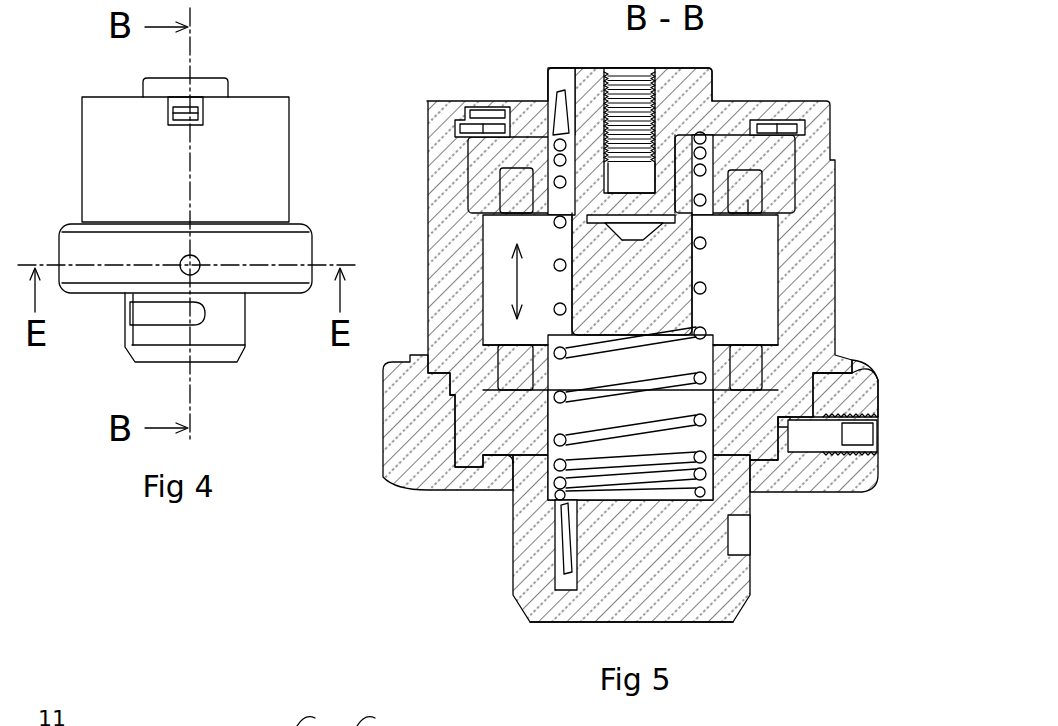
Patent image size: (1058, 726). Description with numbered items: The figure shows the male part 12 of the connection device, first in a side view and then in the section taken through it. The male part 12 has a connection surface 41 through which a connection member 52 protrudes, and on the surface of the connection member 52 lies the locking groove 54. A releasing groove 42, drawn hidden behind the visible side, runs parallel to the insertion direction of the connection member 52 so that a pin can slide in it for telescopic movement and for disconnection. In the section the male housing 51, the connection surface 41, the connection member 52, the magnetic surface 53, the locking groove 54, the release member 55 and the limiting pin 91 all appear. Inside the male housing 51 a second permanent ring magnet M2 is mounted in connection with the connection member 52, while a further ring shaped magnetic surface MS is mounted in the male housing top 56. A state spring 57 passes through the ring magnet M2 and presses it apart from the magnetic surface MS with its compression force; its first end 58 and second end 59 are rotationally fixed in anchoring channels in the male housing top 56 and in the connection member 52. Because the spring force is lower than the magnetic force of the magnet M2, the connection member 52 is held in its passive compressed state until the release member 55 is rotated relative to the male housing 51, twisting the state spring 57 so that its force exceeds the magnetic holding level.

In FIG. 4, the male part 12 is at (255, 80).
In FIG. 5, the male part 12 is at (845, 74).
In FIG. 4, the connection surface 41 is at (263, 295).
In FIG. 5, the connection surface 41 is at (477, 493).
In FIG. 4, the releasing groove 42 is at (130, 330).
In FIG. 5, the male housing 51 is at (808, 217).
In FIG. 4, the connection member 52 is at (225, 330).
In FIG. 5, the connection member 52 is at (533, 542).
In FIG. 5, the magnetic surface 53 is at (707, 623).
In FIG. 4, the locking groove 54 is at (163, 315).
In FIG. 5, the locking groove 54 is at (738, 528).
In FIG. 5, the release member 55 is at (852, 392).
In FIG. 5, the male housing top 56 is at (535, 137).
In FIG. 5, the state spring 57 is at (707, 251).
In FIG. 5, the first end 58 is at (558, 107).
In FIG. 5, the second end 59 is at (565, 557).
In FIG. 5, the limiting pin 91 is at (825, 438).
In FIG. 5, the ring shaped magnetic surface MS is at (748, 202).
In FIG. 5, the second permanent ring magnet M2 is at (742, 357).